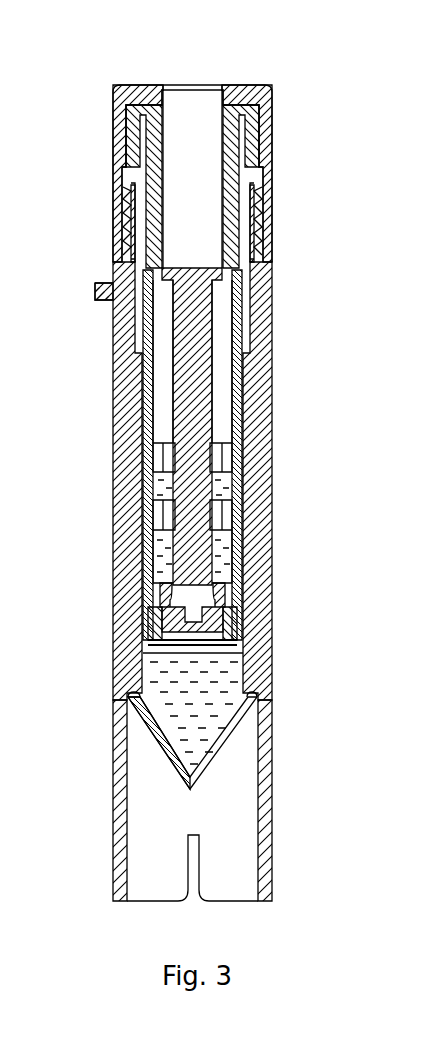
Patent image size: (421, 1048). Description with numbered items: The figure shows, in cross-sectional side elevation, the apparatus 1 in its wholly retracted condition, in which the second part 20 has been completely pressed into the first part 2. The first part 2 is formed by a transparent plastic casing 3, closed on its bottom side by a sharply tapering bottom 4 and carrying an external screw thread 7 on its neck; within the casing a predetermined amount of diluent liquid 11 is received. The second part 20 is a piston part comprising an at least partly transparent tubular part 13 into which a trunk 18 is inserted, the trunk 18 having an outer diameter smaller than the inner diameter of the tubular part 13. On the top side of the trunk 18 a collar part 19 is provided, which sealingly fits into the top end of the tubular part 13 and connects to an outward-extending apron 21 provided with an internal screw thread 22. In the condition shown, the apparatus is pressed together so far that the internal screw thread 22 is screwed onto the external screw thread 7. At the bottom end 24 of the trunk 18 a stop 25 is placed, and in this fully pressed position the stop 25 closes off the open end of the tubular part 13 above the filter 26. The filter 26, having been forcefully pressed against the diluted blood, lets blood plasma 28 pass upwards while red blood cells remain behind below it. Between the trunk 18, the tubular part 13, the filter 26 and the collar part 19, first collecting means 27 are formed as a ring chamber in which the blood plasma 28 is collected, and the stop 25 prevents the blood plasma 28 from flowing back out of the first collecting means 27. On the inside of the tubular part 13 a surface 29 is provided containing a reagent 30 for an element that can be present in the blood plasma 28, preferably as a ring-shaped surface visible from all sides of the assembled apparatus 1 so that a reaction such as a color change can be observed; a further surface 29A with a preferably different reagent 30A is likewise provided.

The apparatus 1 is at (98, 63).
The first part 2 is at (98, 377).
The transparent plastic casing 3 is at (112, 488).
The sharply tapering bottom 4 is at (193, 790).
The external screw thread 7 is at (126, 238).
The diluent liquid 11 is at (162, 682).
The tubular part 13 is at (237, 308).
The trunk 18 is at (194, 398).
The collar part 19 is at (163, 120).
The second part 20 is at (282, 202).
The apron 21 is at (145, 97).
The internal screw thread 22 is at (126, 211).
The bottom end of the trunk 24 is at (194, 594).
The stop 25 is at (225, 612).
The filter 26 is at (190, 645).
The first collecting means 27 is at (164, 413).
The blood plasma 28 is at (164, 558).
The surface 29 is at (167, 518).
The surface 29A is at (167, 458).
The reagent 30 is at (213, 515).
The reagent 30A is at (212, 455).